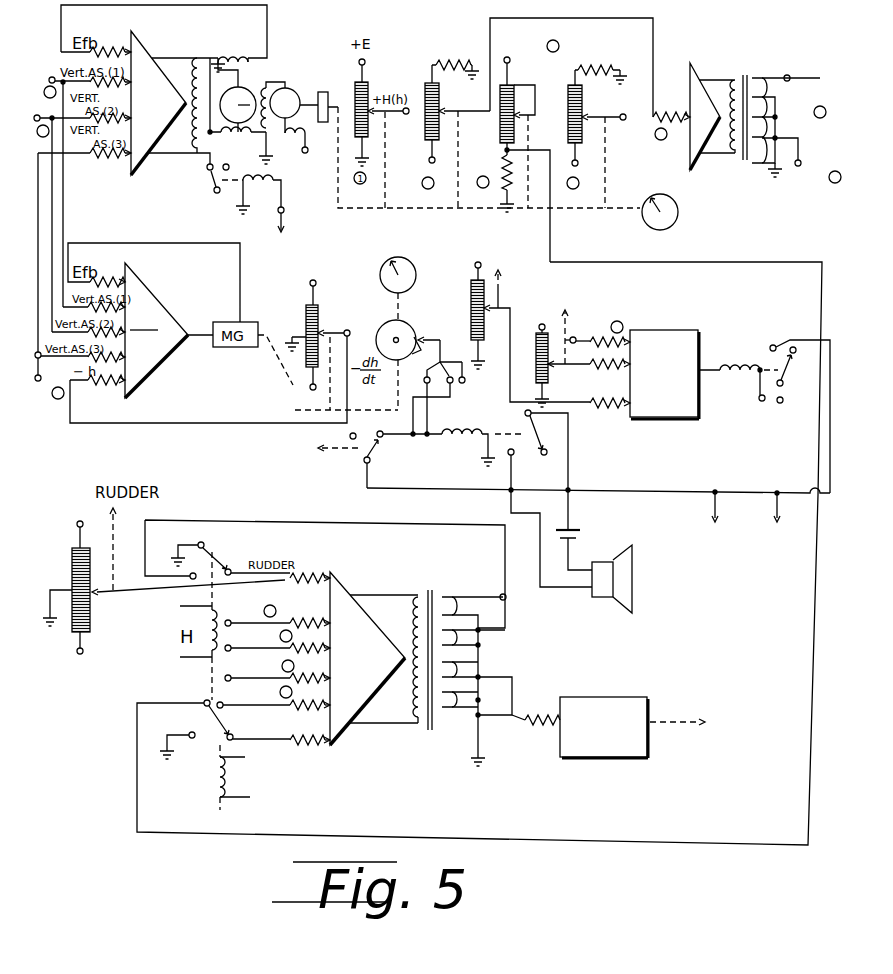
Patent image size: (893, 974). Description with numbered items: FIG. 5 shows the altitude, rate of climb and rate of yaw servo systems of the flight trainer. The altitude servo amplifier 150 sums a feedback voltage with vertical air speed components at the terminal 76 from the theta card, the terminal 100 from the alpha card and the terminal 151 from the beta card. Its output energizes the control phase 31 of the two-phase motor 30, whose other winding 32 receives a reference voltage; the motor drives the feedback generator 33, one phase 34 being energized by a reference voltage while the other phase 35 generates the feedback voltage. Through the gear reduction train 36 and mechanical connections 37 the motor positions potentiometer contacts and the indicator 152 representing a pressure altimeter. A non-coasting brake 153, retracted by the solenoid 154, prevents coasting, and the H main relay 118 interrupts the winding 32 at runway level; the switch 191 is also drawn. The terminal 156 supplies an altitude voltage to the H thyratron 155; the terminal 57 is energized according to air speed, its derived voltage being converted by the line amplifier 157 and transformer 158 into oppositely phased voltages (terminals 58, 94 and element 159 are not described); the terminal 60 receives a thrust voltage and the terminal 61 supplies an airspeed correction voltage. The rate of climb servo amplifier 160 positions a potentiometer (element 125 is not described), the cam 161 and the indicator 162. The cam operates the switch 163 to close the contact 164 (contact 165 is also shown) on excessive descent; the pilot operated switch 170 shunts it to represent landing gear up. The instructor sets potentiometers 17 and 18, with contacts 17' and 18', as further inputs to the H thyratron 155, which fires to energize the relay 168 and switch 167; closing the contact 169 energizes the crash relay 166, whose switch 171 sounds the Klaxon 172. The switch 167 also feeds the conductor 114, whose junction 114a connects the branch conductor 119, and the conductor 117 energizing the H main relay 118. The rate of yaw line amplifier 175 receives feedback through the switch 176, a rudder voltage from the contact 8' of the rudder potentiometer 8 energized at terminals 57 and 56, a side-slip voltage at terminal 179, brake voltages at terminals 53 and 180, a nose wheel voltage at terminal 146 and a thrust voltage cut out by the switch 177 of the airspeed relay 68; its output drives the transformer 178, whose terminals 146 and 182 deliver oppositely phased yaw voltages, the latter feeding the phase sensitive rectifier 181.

The terminal 76 is at (49, 81).
The terminal 100 is at (41, 118).
The altitude servo amplifier 150 is at (140, 42).
The control phase 31 is at (209, 58).
The solenoid 154 is at (259, 55).
The non-coasting brake 153 is at (244, 92).
The motor 30 is at (217, 122).
The motor winding 32 is at (236, 140).
The generator phase 35 is at (278, 91).
The feed-back generator 33 is at (287, 102).
The generator phase 34 is at (305, 149).
The gear reduction train 36 is at (331, 97).
The altitude switch 191 is at (212, 184).
The H main relay 118 is at (265, 176).
The conductor 117 is at (283, 200).
The terminal 156 is at (509, 236).
The terminal 57 is at (429, 163).
The terminal 60 is at (520, 112).
The resistor 159 is at (500, 147).
The mechanical connections 37 is at (509, 210).
The terminal 61 is at (617, 127).
The indicator 152 is at (675, 200).
The line amplifier 157 is at (688, 99).
The transformer 158 is at (753, 76).
The output terminal 58 is at (790, 82).
The output terminal 94 is at (796, 166).
The rate of climb servo amplifier 160 is at (160, 306).
The terminal 151 is at (51, 375).
The climb-dive potentiometer 125 is at (350, 324).
The indicator 162 is at (381, 276).
The cam 161 is at (405, 330).
The cam switch 163 is at (440, 332).
The contact 164 is at (433, 389).
The switch contact 165 is at (462, 361).
The control potentiometer 18 is at (488, 310).
The potentiometer wiper 18' is at (557, 332).
The control potentiometer 17 is at (531, 357).
The potentiometer wiper 17' is at (589, 367).
The H thyratron 155 is at (673, 320).
The relay 168 is at (736, 362).
The switch 167 is at (790, 375).
The contact 169 is at (775, 341).
The conductor 114 is at (822, 444).
The junction 114a is at (716, 490).
The branch conductor 119 is at (775, 511).
The crash relay 166 is at (481, 423).
The crash relay switch 171 is at (530, 421).
The pilot operated switch 170 is at (369, 462).
The Klaxon 172 is at (632, 550).
The rudder potentiometer 8 is at (73, 589).
The contact 8' is at (188, 583).
The voltage terminal 56 is at (80, 660).
The switch 176 is at (208, 547).
The terminal 179 is at (268, 614).
The terminal 53 is at (258, 639).
The terminal 180 is at (259, 669).
The terminal 146 is at (502, 596).
The switch 177 is at (213, 713).
The airspeed relay 68 is at (214, 786).
The rate of yaw line amplifier 175 is at (344, 593).
The transformer 178 is at (447, 589).
The terminal 182 is at (527, 708).
The phase sensitive rectifier 181 is at (631, 697).